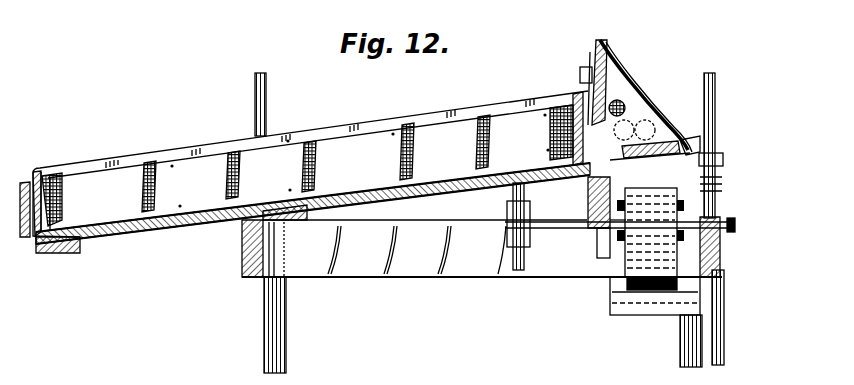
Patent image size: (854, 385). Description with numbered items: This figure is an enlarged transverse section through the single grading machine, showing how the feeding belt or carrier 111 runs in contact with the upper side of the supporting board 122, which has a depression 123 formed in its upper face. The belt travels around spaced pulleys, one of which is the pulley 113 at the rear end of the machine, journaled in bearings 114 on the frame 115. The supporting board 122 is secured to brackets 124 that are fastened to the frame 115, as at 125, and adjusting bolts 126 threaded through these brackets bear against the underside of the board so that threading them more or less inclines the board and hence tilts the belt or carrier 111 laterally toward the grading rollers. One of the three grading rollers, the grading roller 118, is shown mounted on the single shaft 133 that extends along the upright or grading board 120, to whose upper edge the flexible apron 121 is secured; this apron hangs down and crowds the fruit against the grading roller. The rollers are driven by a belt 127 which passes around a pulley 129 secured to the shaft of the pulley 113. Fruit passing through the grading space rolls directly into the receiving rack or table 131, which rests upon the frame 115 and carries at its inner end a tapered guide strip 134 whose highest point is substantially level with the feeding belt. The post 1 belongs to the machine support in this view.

The support post 1 is at (286, 325).
The feeding belt or carrier 111 is at (650, 140).
The pulley 113 is at (667, 215).
The bearings 114 is at (712, 214).
The frame 115 is at (689, 340).
The grading roller 118 is at (621, 104).
The upright or grading board 120 is at (596, 71).
The apron 121 is at (606, 58).
The supporting board 122 is at (690, 139).
The depression 123 is at (709, 116).
The brackets 124 is at (716, 186).
The fastening 125 is at (588, 195).
The adjusting bolts 126 is at (714, 166).
The belt 127 is at (560, 131).
The pulley 129 is at (524, 255).
The receiving rack or table 131 is at (384, 174).
The shaft 133 is at (634, 123).
The tapered guide strip 134 is at (590, 152).